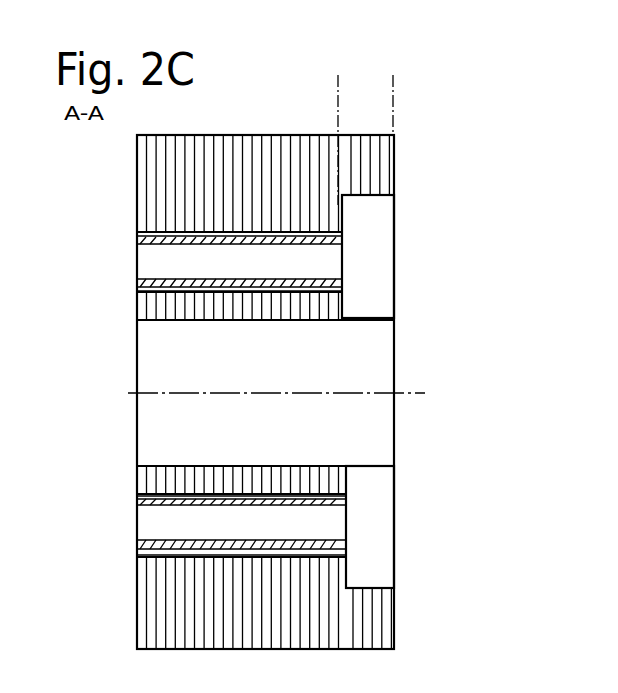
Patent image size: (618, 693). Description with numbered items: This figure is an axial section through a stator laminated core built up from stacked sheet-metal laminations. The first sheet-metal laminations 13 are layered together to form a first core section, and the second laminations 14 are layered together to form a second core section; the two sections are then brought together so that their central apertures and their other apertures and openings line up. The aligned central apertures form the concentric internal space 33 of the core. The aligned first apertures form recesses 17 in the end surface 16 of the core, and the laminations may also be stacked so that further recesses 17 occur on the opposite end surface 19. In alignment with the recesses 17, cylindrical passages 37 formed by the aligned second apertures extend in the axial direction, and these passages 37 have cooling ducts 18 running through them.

The first sheet-metal laminations 13 is at (241, 126).
The second laminations 14 is at (368, 126).
The end surface 16 is at (452, 377).
The recesses 17 is at (372, 239).
The cooling ducts 18 is at (138, 288).
The end surface 19 is at (112, 429).
The concentric internal space 33 is at (270, 366).
The passages 37 is at (152, 259).